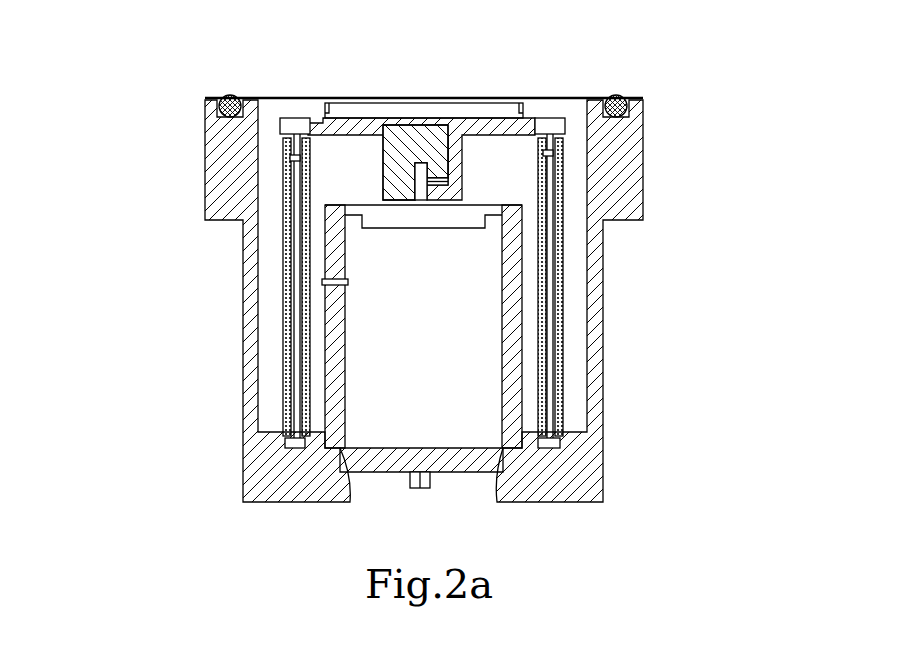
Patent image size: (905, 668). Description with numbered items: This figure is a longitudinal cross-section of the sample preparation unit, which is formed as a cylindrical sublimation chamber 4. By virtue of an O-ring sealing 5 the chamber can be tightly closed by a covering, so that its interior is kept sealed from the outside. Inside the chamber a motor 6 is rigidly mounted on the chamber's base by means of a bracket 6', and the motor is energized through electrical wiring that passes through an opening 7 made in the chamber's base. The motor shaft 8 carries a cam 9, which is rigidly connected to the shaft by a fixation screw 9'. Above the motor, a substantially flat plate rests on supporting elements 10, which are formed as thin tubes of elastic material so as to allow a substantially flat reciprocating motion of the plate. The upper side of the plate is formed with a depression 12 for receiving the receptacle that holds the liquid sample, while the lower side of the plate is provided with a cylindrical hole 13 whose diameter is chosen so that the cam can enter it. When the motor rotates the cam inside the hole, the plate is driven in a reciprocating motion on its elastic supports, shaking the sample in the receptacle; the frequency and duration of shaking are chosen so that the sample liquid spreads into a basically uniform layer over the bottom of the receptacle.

The sublimation chamber 4 is at (625, 202).
The O-ring sealing 5 is at (621, 96).
The motor 6 is at (423, 315).
The bracket 6' is at (512, 326).
The opening 7 is at (432, 468).
The motor shaft 8 is at (415, 200).
The cam 9 is at (389, 162).
The fixation screw 9' is at (469, 175).
The supporting elements 10 is at (290, 152).
The depression 12 is at (350, 112).
The cylindrical hole 13 is at (448, 136).